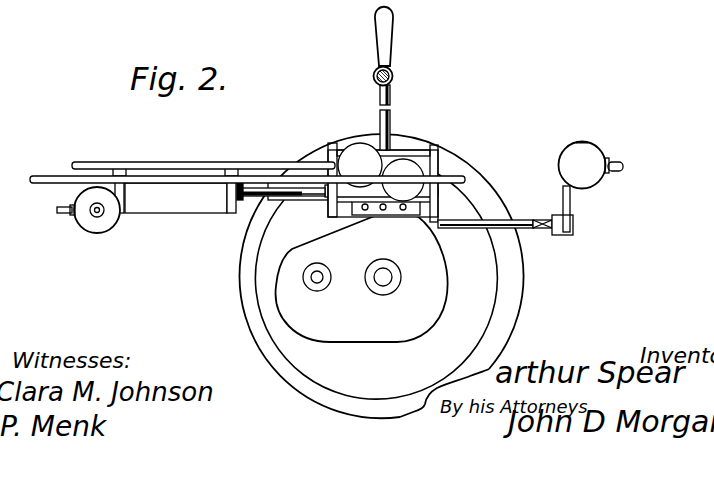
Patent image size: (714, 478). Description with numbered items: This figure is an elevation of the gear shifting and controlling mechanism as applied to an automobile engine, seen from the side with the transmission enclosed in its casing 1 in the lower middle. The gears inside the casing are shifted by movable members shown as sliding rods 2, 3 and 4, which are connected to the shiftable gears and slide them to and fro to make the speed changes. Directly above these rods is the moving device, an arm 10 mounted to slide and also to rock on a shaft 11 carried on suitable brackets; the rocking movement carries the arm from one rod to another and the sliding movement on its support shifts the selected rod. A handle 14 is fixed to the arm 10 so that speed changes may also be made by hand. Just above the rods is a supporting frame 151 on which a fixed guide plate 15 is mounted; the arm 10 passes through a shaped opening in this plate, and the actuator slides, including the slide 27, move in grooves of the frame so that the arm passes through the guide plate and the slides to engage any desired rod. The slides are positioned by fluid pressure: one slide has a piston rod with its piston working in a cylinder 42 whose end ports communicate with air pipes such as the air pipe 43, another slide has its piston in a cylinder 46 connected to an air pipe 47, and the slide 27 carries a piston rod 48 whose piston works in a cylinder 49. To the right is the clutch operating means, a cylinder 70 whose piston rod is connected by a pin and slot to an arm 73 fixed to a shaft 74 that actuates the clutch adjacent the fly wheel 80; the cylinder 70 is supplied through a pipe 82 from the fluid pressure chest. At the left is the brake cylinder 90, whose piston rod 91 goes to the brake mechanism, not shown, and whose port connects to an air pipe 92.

The casing 1 is at (262, 279).
The sliding rod 2 is at (363, 211).
The sliding rod 3 is at (382, 211).
The sliding rod 4 is at (403, 211).
The arm 10 is at (388, 123).
The shaft 11 is at (393, 75).
The handle 14 is at (387, 38).
The guide plate 15 is at (407, 153).
The actuator slide 27 is at (317, 188).
The cylinder 42 is at (358, 153).
The air pipe 43 is at (287, 168).
The cylinder 46 is at (412, 168).
The air pipe 47 is at (58, 175).
The piston rod 48 is at (254, 198).
The cylinder 49 is at (170, 206).
The cylinder 70 is at (593, 157).
The arm 73 is at (564, 202).
The shaft 74 is at (471, 233).
The fly wheel 80 is at (517, 288).
The pipe 82 is at (623, 166).
The brake cylinder 90 is at (102, 226).
The piston rod 91 is at (93, 213).
The air pipe 92 is at (57, 210).
The supporting frame 151 is at (300, 198).